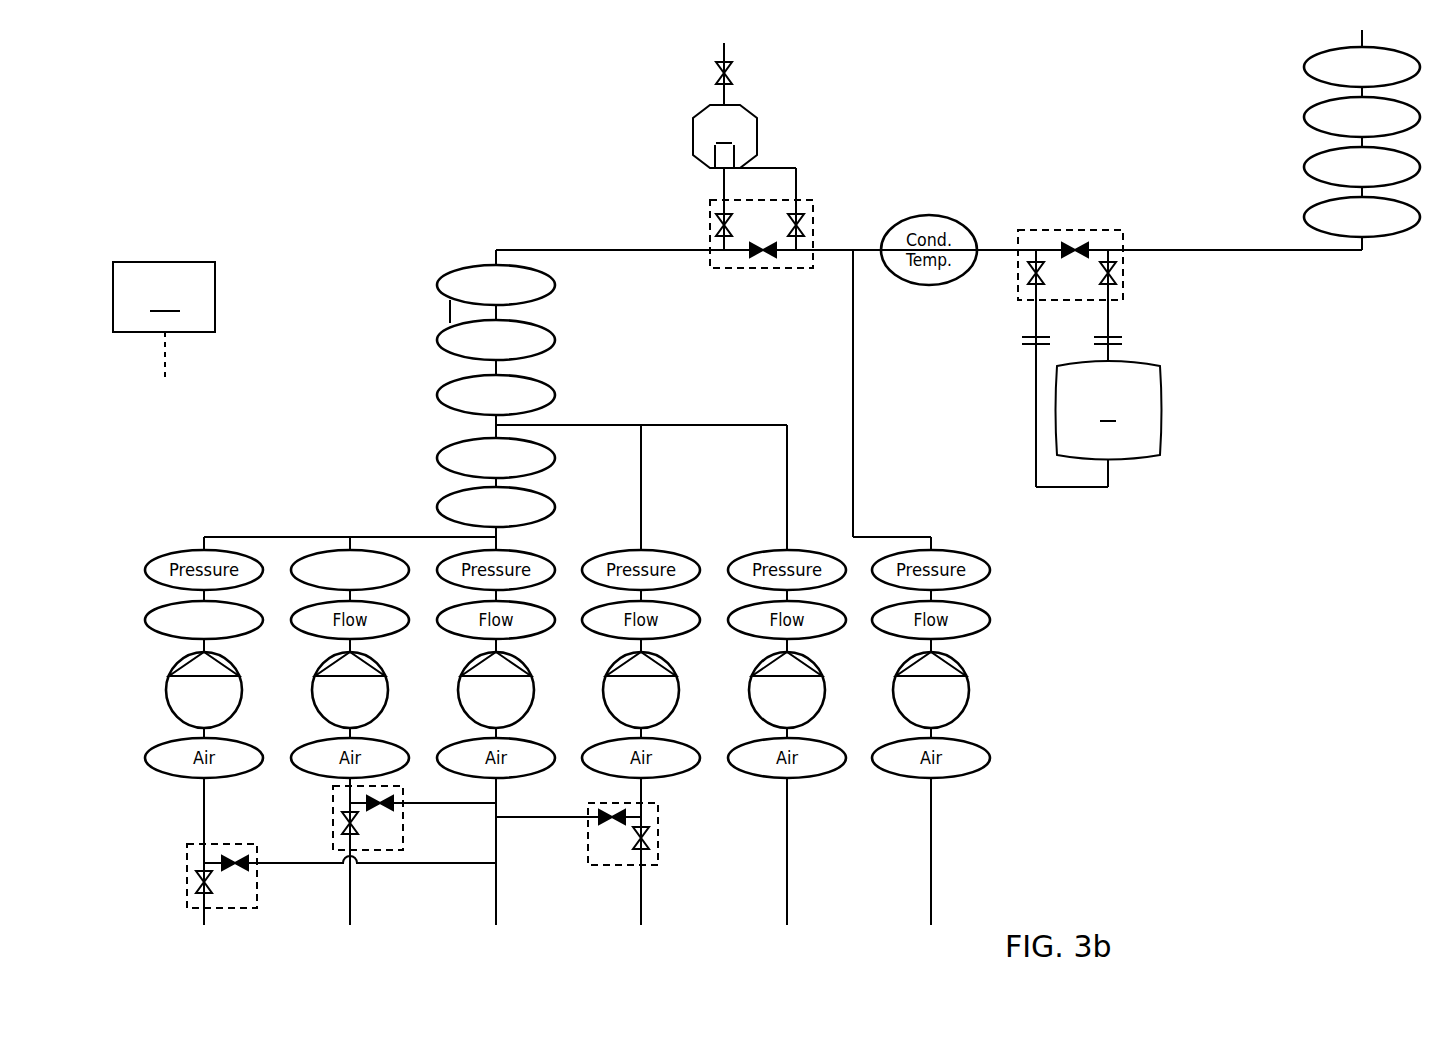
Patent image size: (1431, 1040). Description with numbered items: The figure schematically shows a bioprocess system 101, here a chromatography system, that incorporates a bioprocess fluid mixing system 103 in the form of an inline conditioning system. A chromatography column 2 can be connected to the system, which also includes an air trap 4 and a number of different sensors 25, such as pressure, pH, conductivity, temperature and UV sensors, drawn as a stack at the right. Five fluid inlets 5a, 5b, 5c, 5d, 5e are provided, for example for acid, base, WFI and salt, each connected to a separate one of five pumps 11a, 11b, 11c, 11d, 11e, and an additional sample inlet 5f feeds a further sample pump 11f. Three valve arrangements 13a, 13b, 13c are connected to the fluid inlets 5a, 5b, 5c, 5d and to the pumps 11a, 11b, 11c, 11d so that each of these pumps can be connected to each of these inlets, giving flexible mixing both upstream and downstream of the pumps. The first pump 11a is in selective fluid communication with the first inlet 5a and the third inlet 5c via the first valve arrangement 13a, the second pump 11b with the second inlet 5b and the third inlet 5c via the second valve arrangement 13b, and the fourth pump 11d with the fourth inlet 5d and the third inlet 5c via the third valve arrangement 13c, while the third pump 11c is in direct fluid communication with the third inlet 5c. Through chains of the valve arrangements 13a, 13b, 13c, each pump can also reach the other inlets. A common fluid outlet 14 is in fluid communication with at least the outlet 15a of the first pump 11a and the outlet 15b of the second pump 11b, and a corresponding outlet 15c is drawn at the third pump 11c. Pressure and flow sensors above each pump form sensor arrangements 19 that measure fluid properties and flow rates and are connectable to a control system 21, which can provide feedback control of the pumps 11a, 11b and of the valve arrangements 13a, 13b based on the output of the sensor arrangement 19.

The chromatography column 2 is at (1092, 368).
The air trap 4 is at (725, 105).
The first fluid inlet 5a is at (192, 922).
The second fluid inlet 5b is at (338, 922).
The third fluid inlet 5c is at (484, 922).
The fourth fluid inlet 5d is at (629, 922).
The fifth fluid inlet 5e is at (775, 922).
The sample inlet 5f is at (919, 922).
The first pump 11a is at (168, 688).
The second pump 11b is at (315, 684).
The third pump 11c is at (463, 684).
The fourth pump 11d is at (605, 682).
The fifth pump 11e is at (751, 682).
The pump P6 11f is at (895, 682).
The first valve arrangement 13a is at (187, 858).
The second valve arrangement 13b is at (333, 812).
The third valve arrangement 13c is at (658, 826).
The common fluid outlet 14 is at (494, 531).
The outlet of the first pump 15a is at (196, 654).
The outlet of the second pump 15b is at (342, 654).
The pump head 15c is at (488, 654).
The sensor arrangement 19 is at (256, 607).
The control system 21 is at (164, 320).
The sensors 25 is at (1305, 67).
The bioprocess system 101 is at (1332, 413).
The bioprocess fluid mixing system 103 is at (373, 332).